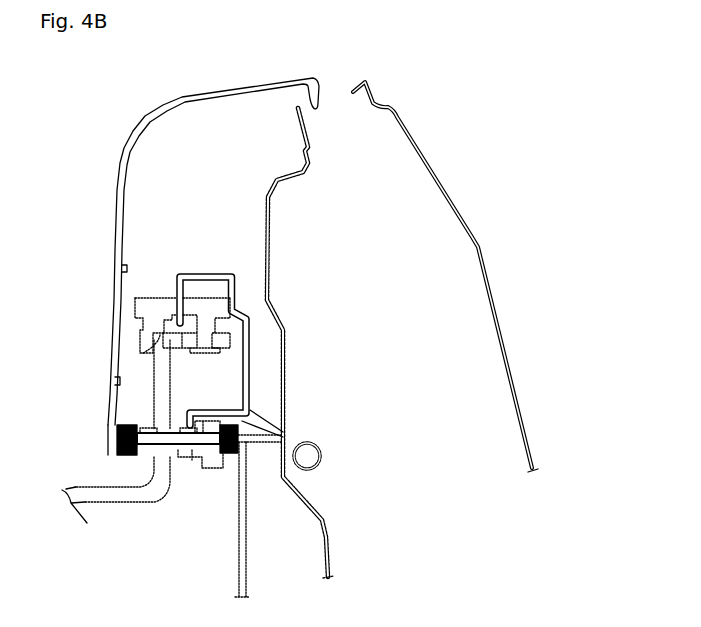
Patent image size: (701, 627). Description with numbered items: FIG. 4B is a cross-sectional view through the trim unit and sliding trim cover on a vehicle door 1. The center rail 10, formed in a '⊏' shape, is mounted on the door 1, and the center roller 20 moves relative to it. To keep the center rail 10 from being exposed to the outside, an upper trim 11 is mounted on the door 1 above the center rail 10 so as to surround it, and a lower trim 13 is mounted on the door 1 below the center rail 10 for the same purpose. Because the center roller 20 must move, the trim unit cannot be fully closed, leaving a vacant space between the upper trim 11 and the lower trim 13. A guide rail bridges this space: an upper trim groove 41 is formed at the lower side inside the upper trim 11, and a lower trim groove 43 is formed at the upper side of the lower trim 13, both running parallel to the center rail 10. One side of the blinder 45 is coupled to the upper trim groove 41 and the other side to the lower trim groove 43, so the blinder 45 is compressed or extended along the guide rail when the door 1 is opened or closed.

The door 1 is at (397, 193).
The center rail 10 is at (205, 272).
The upper trim 11 is at (152, 116).
The lower trim 13 is at (236, 563).
The center roller 20 is at (108, 483).
The upper trim groove 41 is at (120, 423).
The lower trim groove 43 is at (248, 418).
The blinder 45 is at (193, 452).